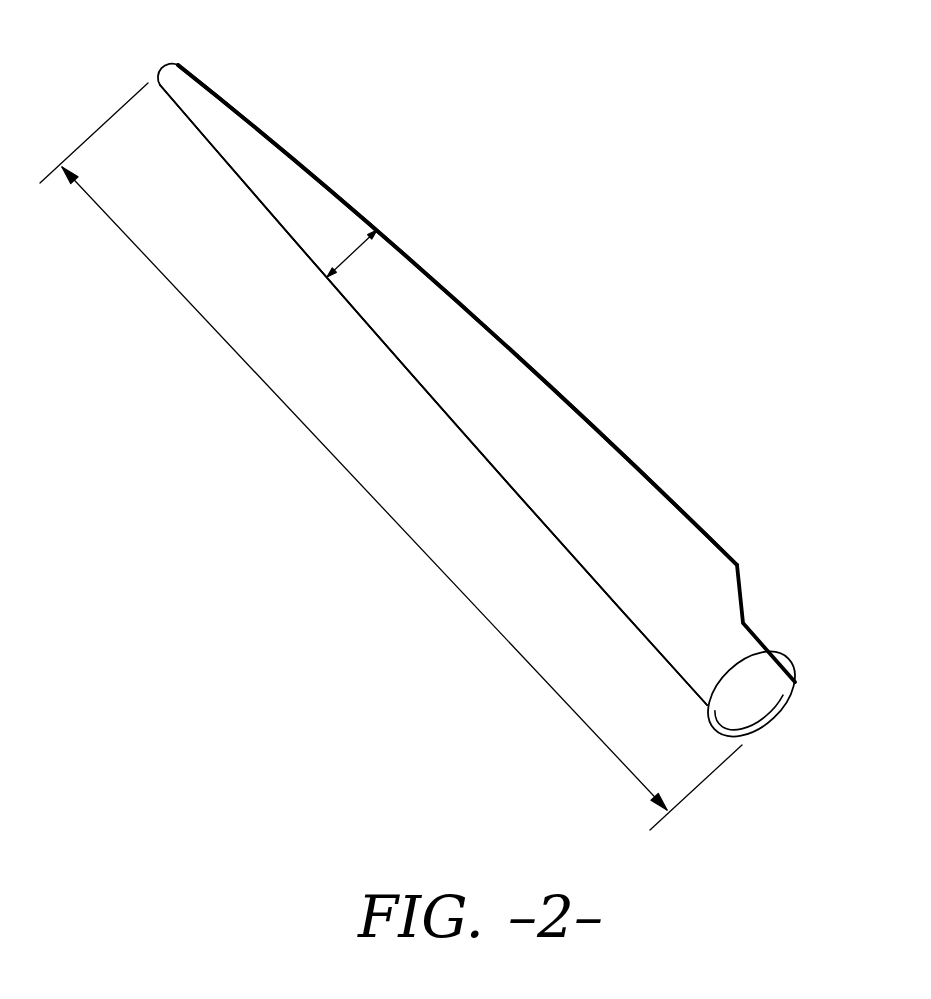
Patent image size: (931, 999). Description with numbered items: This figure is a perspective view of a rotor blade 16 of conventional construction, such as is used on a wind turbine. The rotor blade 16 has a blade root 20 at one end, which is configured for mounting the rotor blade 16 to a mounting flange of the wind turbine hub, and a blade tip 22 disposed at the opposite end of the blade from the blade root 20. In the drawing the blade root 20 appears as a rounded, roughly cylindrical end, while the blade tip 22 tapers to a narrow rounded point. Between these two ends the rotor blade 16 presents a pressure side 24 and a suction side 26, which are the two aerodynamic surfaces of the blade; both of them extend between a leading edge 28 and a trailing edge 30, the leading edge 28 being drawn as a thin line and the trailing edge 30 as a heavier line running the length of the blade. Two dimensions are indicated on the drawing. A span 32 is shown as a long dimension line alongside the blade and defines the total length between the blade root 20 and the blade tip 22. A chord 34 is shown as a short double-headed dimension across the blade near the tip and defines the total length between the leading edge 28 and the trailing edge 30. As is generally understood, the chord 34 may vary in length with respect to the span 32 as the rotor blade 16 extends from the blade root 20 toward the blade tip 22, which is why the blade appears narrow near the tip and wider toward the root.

The rotor blade 16 is at (472, 377).
The blade root 20 is at (747, 683).
The blade tip 22 is at (158, 68).
The pressure side 24 is at (573, 511).
The suction side 26 is at (502, 370).
The leading edge 28 is at (390, 353).
The trailing edge 30 is at (327, 180).
The span 32 is at (253, 373).
The chord 34 is at (352, 247).